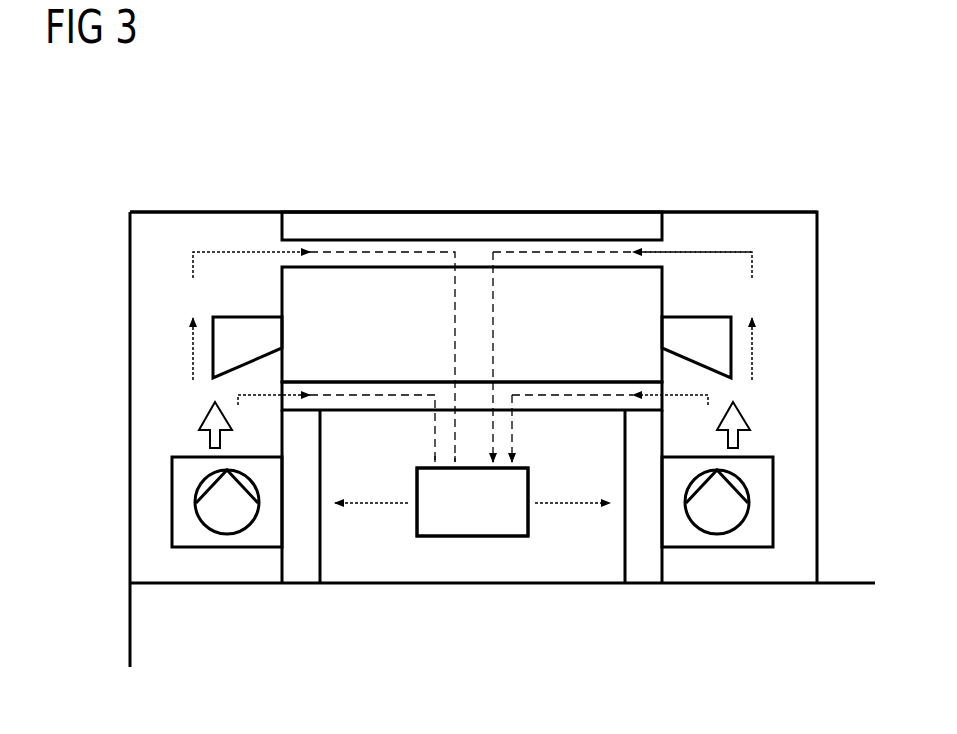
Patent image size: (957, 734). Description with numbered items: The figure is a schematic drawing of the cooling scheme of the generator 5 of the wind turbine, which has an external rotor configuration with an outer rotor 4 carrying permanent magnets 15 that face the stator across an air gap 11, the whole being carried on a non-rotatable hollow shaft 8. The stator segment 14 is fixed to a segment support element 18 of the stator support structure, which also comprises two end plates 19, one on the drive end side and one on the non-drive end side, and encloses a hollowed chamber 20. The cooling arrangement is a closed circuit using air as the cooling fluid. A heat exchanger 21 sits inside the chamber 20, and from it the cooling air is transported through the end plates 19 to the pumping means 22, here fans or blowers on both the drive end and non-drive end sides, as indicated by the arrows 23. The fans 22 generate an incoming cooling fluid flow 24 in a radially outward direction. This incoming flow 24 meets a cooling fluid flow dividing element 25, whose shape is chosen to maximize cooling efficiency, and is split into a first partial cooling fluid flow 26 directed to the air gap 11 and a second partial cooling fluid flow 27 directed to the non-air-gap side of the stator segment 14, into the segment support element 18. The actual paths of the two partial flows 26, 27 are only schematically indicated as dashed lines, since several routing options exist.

The rotor 4 is at (236, 212).
The generator 5 is at (541, 148).
The hollow shaft 8 is at (128, 626).
The air gap 11 is at (627, 252).
The stator segment 14 is at (472, 290).
The permanent magnets 15 is at (355, 226).
The segment support element 18 is at (323, 400).
The end plates 19 is at (302, 560).
The hollowed chamber 20 is at (424, 560).
The heat exchanger 21 is at (470, 537).
The pumping means 22 is at (172, 506).
The arrows 23 is at (368, 505).
The incoming cooling fluid flow 24 is at (208, 445).
The cooling fluid flow dividing element 25 is at (213, 317).
The first partial cooling fluid flow 26 is at (193, 270).
The second partial cooling fluid flow 27 is at (238, 393).